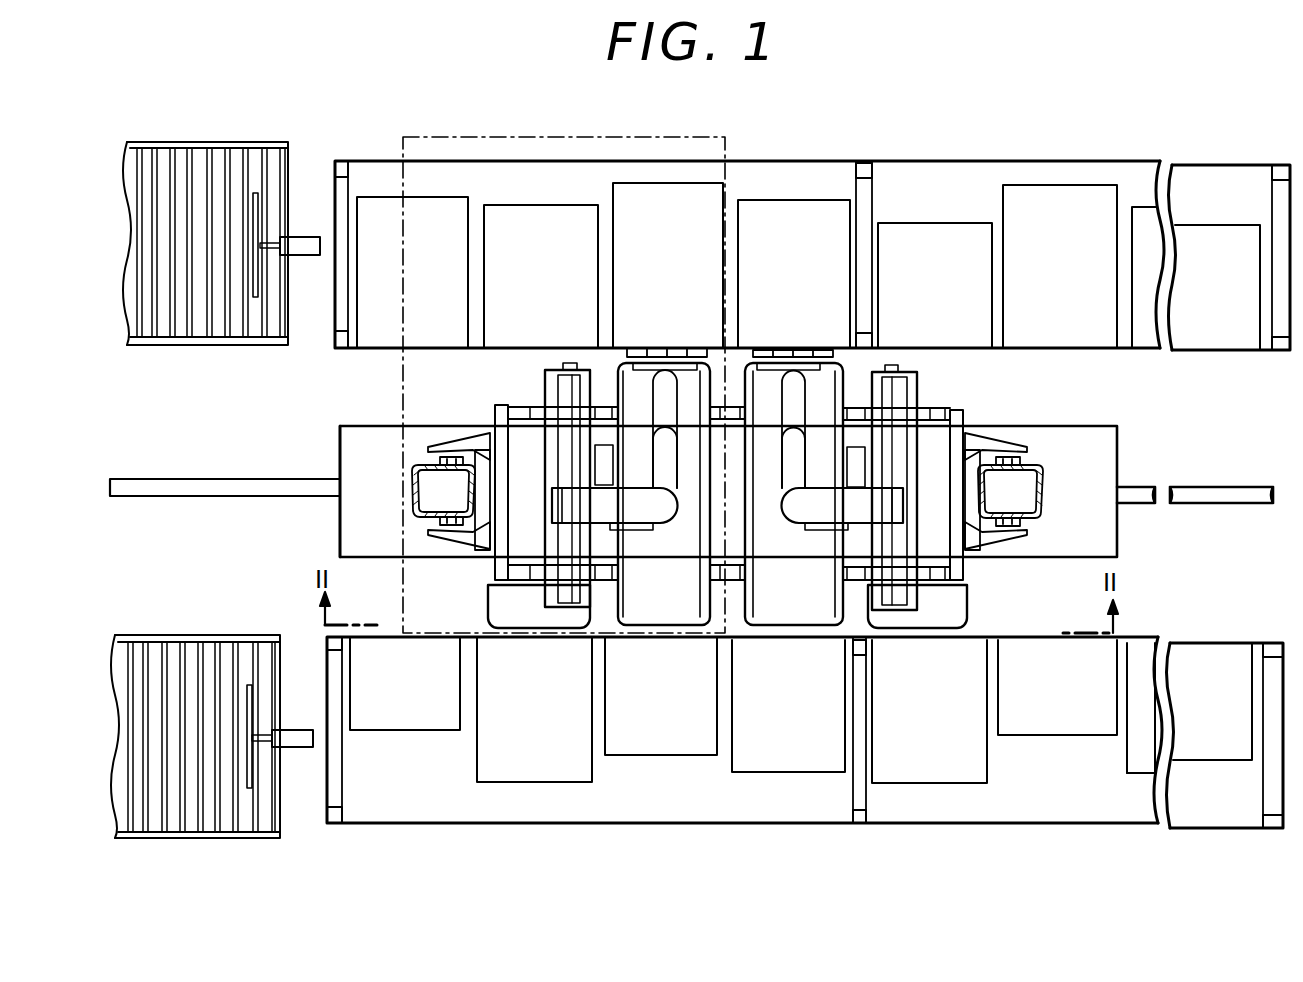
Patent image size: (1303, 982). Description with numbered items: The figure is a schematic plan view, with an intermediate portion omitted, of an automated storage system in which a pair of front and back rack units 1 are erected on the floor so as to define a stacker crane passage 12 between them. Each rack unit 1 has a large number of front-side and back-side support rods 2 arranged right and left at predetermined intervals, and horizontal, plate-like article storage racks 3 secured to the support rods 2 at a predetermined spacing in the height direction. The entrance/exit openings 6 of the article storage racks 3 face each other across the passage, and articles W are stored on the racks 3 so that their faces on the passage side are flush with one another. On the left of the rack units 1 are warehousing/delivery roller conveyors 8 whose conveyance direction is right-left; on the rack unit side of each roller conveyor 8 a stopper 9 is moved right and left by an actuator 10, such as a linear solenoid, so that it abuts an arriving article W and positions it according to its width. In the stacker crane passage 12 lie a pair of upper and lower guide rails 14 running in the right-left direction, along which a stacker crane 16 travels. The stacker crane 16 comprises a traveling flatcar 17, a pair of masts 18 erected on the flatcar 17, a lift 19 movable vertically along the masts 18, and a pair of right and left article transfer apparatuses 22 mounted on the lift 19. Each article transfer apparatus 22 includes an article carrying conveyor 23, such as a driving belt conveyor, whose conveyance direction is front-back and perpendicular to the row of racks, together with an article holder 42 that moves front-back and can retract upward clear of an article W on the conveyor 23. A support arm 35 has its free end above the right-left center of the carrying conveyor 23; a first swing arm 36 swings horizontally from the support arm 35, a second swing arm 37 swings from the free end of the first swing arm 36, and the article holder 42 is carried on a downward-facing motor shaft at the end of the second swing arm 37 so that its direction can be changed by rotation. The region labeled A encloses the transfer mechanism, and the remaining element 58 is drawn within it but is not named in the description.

The rack unit 1 is at (1197, 155).
The support rod 2 is at (863, 168).
The article storage rack 3 is at (798, 183).
The entrance/exit opening 6 is at (1093, 360).
The warehousing/delivery roller conveyor 8 is at (187, 173).
The stopper 9 is at (257, 210).
The actuator 10 is at (308, 243).
The stacker crane passage 12 is at (330, 457).
The guide rail 14 is at (165, 488).
The stacker crane 16 is at (388, 437).
The traveling flatcar 17 is at (357, 448).
The mast 18 is at (430, 478).
The lift 19 is at (498, 567).
The article transfer apparatus 22 is at (683, 522).
The article carrying conveyor 23 is at (673, 632).
The support arm 35 is at (643, 512).
The first swing arm 36 is at (663, 445).
The second swing arm 37 is at (630, 347).
The article holder 42 is at (697, 347).
The rod 58 is at (662, 402).
The section A is at (522, 133).
The article W is at (1212, 327).